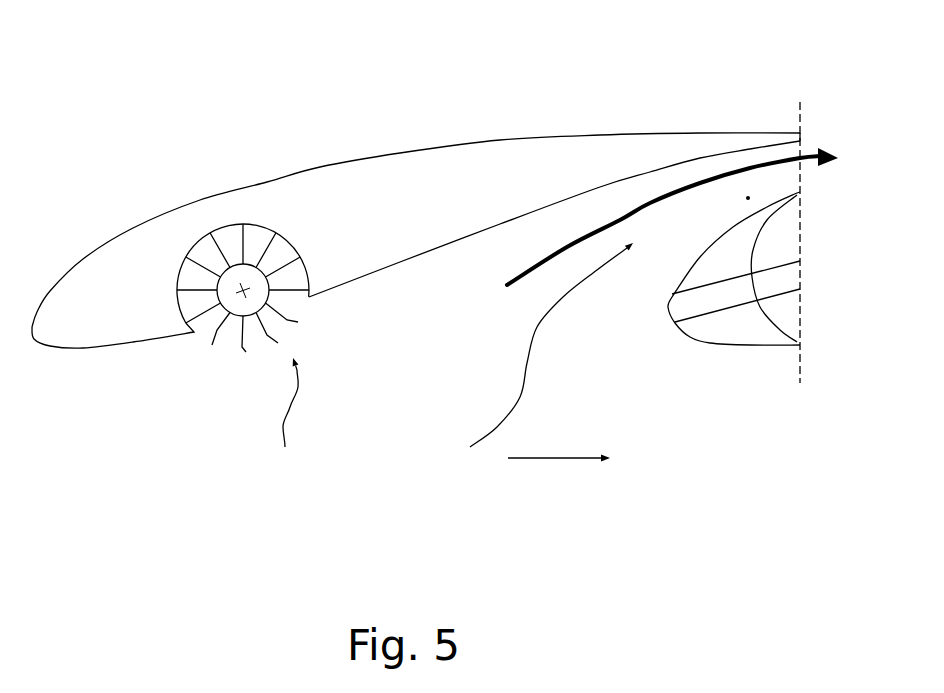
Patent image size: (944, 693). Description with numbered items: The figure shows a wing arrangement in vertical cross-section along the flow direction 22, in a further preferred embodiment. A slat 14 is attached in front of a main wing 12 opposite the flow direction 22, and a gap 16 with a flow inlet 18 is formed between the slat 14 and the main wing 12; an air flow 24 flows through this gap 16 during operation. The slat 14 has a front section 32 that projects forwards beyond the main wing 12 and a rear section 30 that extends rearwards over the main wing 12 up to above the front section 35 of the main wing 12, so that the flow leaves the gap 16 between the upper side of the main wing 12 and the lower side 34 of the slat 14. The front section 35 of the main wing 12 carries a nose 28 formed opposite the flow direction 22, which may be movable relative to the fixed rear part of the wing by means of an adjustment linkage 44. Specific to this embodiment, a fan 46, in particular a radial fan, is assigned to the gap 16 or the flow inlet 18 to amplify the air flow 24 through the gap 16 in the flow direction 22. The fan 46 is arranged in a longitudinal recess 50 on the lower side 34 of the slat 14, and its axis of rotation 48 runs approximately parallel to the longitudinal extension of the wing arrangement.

The main wing 12 is at (785, 232).
The slat 14 is at (416, 249).
The gap 16 is at (748, 198).
The flow inlet 18 is at (541, 360).
The flow direction 22 is at (560, 462).
The air flow 24 is at (592, 228).
The nose 28 is at (761, 335).
The rear section of the slat 30 is at (655, 152).
The front section of the slat 32 is at (103, 327).
The lower side of the slat 34 is at (383, 268).
The front section of the main wing 35 is at (780, 310).
The adjustment linkage 44 is at (703, 303).
The fan 46 is at (283, 418).
The axis of rotation 48 is at (243, 290).
The longitudinal recess 50 is at (199, 328).